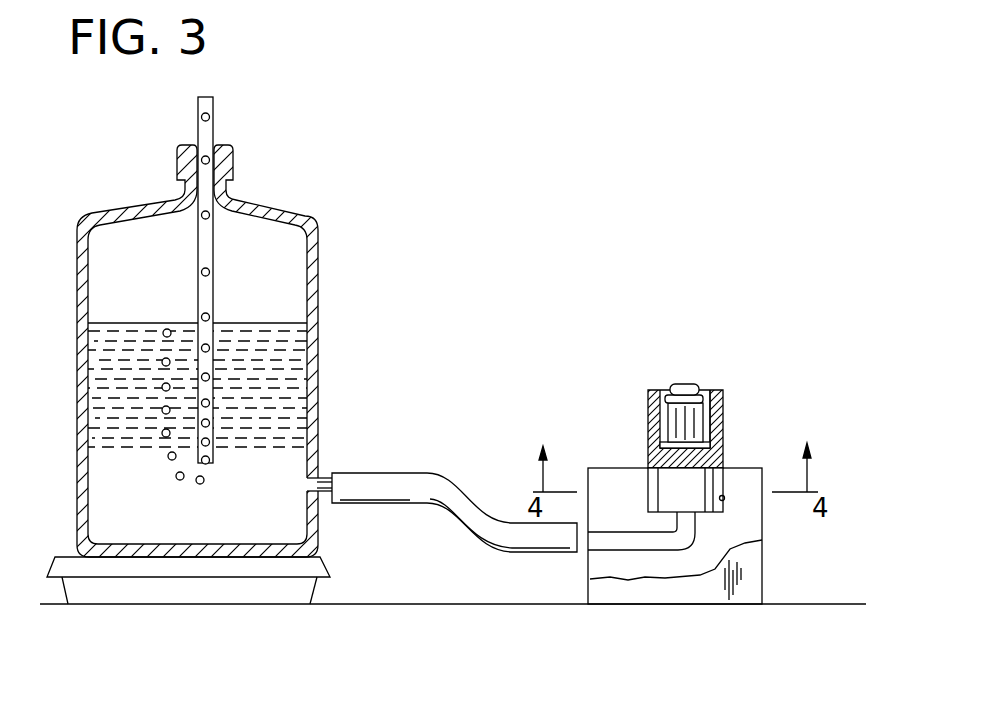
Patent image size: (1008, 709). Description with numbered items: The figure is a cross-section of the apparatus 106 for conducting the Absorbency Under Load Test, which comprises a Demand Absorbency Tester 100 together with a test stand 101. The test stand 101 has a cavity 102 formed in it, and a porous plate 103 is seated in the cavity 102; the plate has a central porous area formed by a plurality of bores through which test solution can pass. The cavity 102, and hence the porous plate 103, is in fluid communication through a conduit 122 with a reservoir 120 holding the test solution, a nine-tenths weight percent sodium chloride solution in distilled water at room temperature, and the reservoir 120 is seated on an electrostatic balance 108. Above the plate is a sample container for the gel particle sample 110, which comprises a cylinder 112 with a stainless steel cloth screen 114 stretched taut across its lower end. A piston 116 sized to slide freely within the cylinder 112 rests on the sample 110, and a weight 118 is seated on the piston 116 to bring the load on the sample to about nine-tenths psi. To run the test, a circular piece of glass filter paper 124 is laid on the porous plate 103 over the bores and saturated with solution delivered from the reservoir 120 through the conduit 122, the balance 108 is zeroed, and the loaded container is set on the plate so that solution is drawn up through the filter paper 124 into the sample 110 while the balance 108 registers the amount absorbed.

The Demand Absorbency Tester 100 is at (341, 185).
The test stand 101 is at (583, 590).
The cavity 102 is at (724, 500).
The porous plate 103 is at (720, 483).
The apparatus 106 is at (667, 443).
The electrostatic balance 108 is at (314, 570).
The sample 110 is at (665, 446).
The cylinder 112 is at (722, 392).
The stainless steel cloth screen 114 is at (716, 447).
The piston 116 is at (720, 412).
The weight 118 is at (683, 383).
The reservoir 120 is at (318, 331).
The conduit 122 is at (380, 471).
The glass filter paper 124 is at (668, 476).